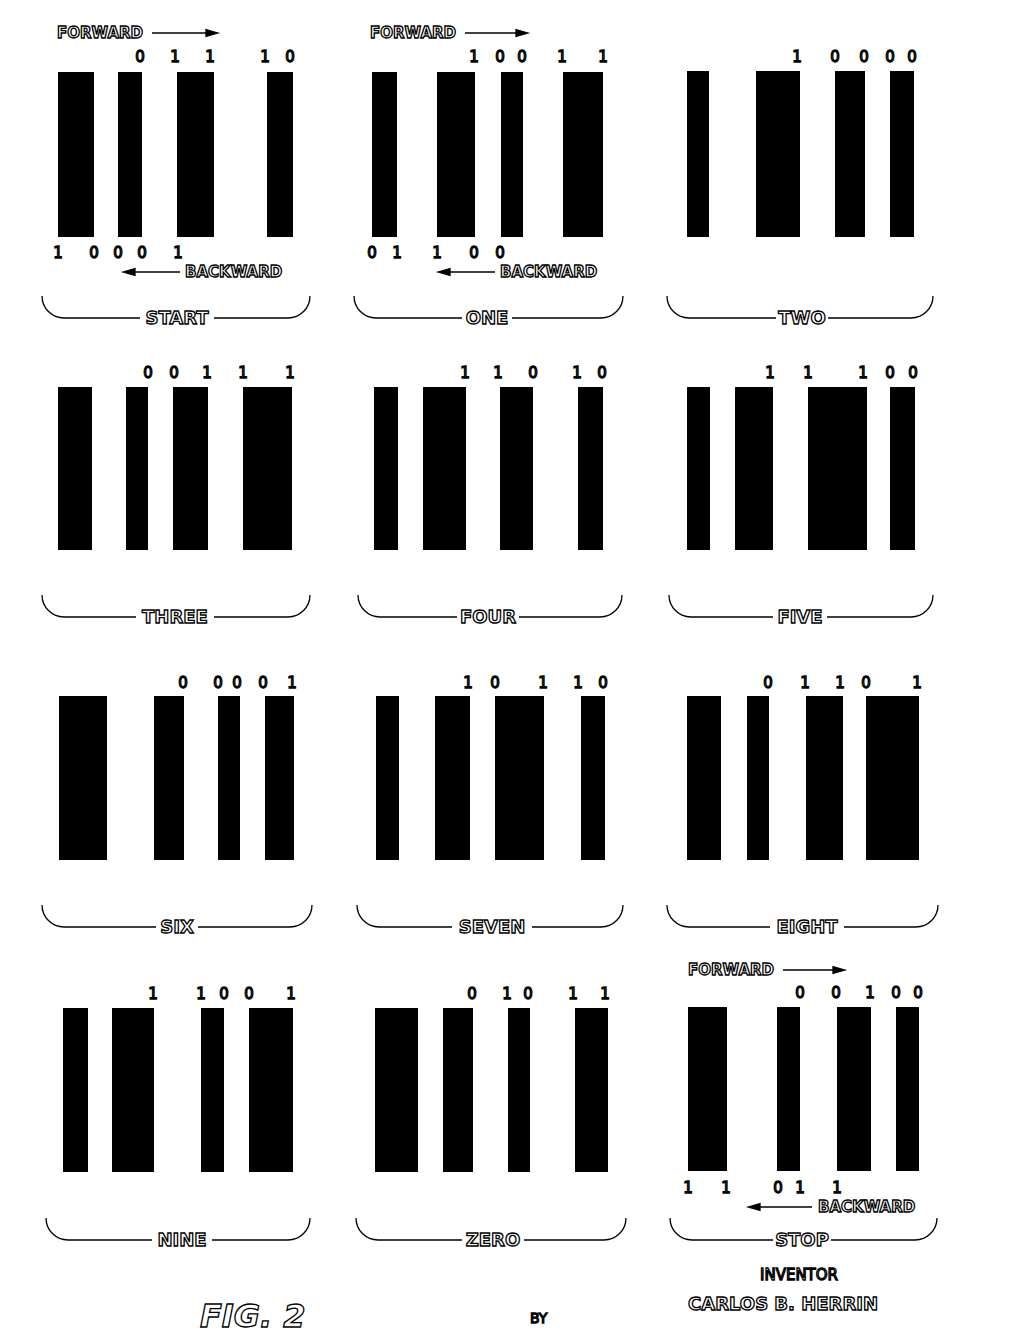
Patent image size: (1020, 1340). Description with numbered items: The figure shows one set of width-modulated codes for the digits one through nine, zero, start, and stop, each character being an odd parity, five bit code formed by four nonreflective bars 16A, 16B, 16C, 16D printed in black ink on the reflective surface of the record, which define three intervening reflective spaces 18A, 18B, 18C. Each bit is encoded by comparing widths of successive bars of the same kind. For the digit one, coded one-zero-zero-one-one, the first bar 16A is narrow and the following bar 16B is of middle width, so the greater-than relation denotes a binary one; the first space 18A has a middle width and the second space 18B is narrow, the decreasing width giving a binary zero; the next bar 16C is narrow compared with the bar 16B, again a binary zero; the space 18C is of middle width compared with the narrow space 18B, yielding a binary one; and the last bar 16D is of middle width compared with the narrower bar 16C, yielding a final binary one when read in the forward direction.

The first nonreflective bar 16A is at (78, 238).
The second nonreflective bar 16B is at (118, 238).
The third nonreflective bar 16C is at (203, 237).
The fourth nonreflective bar 16D is at (281, 237).
The first reflective space 18A is at (104, 88).
The second reflective space 18B is at (157, 86).
The third reflective space 18C is at (236, 88).